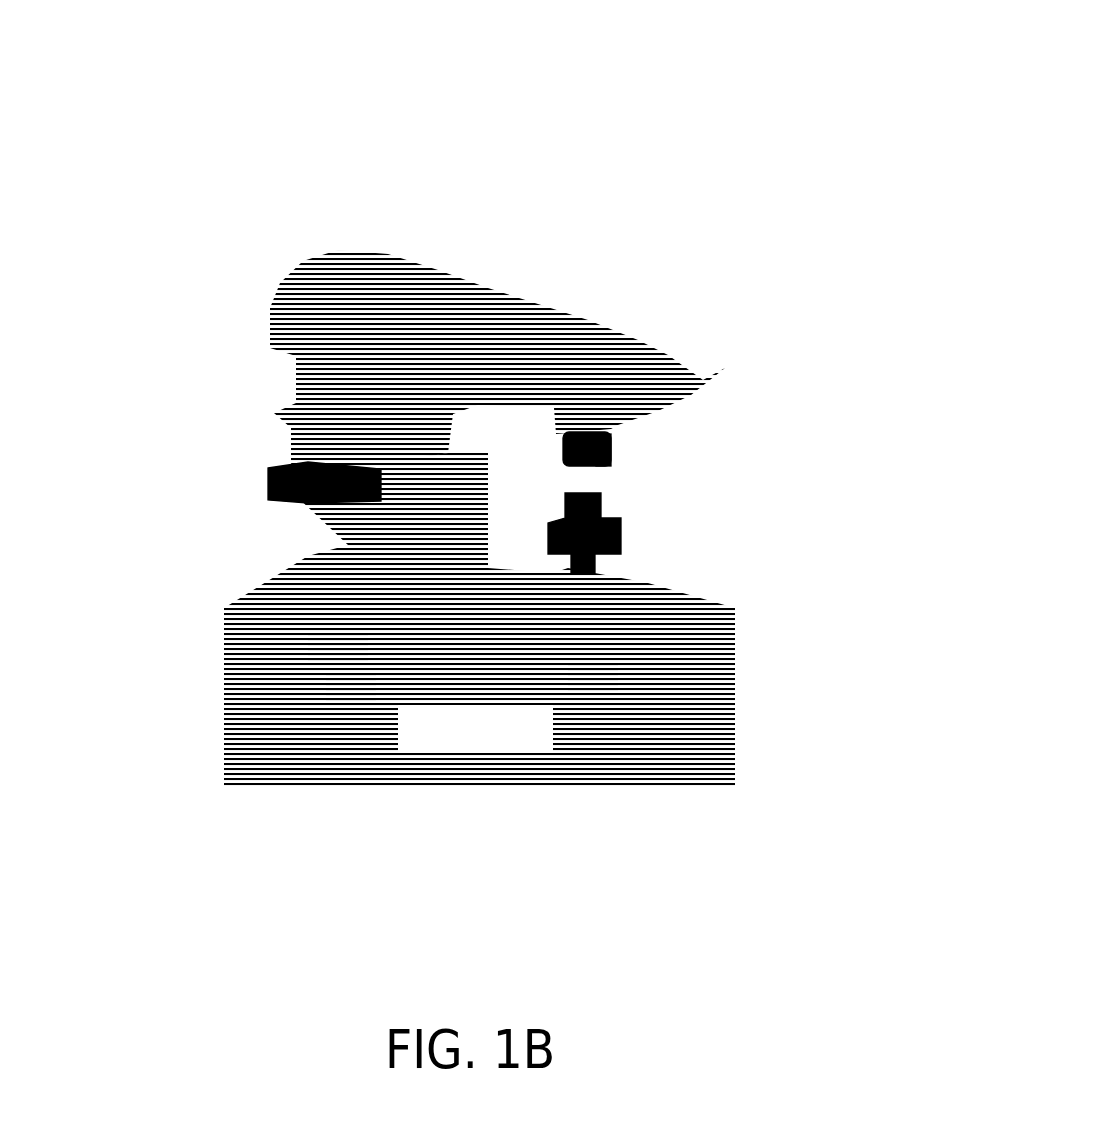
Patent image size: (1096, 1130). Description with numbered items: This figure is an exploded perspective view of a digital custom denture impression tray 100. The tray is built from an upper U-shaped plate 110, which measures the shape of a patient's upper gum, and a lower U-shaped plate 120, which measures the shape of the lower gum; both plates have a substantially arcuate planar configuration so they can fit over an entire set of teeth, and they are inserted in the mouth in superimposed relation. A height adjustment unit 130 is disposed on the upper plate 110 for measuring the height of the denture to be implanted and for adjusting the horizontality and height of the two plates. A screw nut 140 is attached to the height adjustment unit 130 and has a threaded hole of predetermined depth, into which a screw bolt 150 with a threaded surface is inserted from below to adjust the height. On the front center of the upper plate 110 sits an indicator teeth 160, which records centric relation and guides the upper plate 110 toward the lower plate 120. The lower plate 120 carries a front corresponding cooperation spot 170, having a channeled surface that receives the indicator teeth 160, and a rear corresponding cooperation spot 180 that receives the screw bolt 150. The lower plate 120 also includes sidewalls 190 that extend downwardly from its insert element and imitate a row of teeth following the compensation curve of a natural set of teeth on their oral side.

The digital custom denture impression tray 100 is at (203, 78).
The upper U-shaped plate 110 is at (541, 268).
The lower U-shaped plate 120 is at (396, 740).
The height adjustment unit 130 is at (603, 431).
The screw nut 140 is at (604, 444).
The screw bolt 150 is at (612, 518).
The indicator teeth 160 is at (259, 476).
The front corresponding cooperation spot 170 is at (325, 676).
The rear corresponding cooperation spot 180 is at (581, 670).
The sidewalls 190 is at (303, 640).